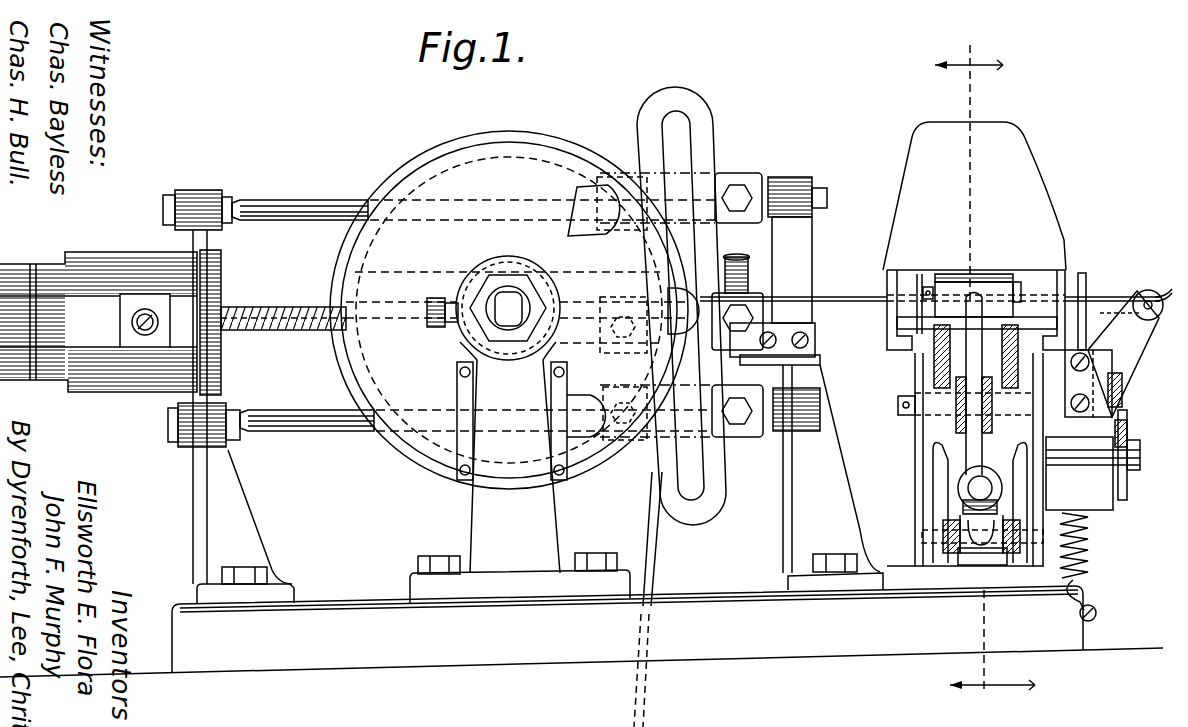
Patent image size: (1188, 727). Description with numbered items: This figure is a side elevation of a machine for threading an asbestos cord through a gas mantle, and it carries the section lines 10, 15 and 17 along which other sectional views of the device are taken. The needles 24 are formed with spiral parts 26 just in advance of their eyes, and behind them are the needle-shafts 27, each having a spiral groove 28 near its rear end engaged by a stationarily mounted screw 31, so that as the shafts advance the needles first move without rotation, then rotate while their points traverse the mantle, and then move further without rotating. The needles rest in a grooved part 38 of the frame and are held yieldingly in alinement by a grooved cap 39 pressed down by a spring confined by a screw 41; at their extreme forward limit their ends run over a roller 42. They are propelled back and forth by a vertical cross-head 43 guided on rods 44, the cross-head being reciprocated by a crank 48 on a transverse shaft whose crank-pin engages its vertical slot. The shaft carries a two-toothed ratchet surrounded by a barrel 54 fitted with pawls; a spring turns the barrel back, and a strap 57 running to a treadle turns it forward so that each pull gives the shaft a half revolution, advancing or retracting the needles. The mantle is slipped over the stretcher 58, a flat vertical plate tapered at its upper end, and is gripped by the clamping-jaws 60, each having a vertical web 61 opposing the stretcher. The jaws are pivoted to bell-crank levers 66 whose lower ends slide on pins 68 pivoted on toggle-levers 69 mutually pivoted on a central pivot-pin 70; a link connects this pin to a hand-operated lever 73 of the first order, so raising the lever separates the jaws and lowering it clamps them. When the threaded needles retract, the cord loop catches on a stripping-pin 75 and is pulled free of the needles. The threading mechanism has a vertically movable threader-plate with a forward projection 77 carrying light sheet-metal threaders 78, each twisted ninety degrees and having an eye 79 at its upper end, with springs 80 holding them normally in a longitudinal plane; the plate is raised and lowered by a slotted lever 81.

The section line 10 is at (985, 375).
The section line 15 is at (300, 262).
The section line 17 is at (855, 265).
The needles 24 is at (877, 290).
The spiral parts 26 is at (1163, 292).
The needle-shafts 27 is at (232, 303).
The spiral groove 28 is at (290, 333).
The screws 31 is at (147, 312).
The grooved part 38 is at (742, 352).
The grooved cap 39 is at (746, 274).
The screw 41 is at (740, 253).
The roller 42 is at (1140, 292).
The vertical cross-head 43 is at (713, 497).
The rods 44 is at (330, 203).
The crank 48 is at (590, 240).
The barrel 54 is at (437, 170).
The strap 57 is at (651, 566).
The stretcher 58 is at (974, 196).
The clamping-jaws 60 is at (912, 318).
The vertical web 61 is at (1030, 283).
The bell-crank lever 66 is at (920, 411).
The pins 68 is at (968, 490).
The toggle-levers 69 is at (950, 562).
The central pivot-pin 70 is at (1025, 556).
The hand-operated lever 73 is at (1003, 362).
The stripping-pin 75 is at (1081, 272).
The forward projection 77 is at (1117, 415).
The threaders 78 is at (1120, 328).
The eye 79 is at (1120, 380).
The springs 80 is at (1120, 394).
The lever 81 is at (1124, 480).